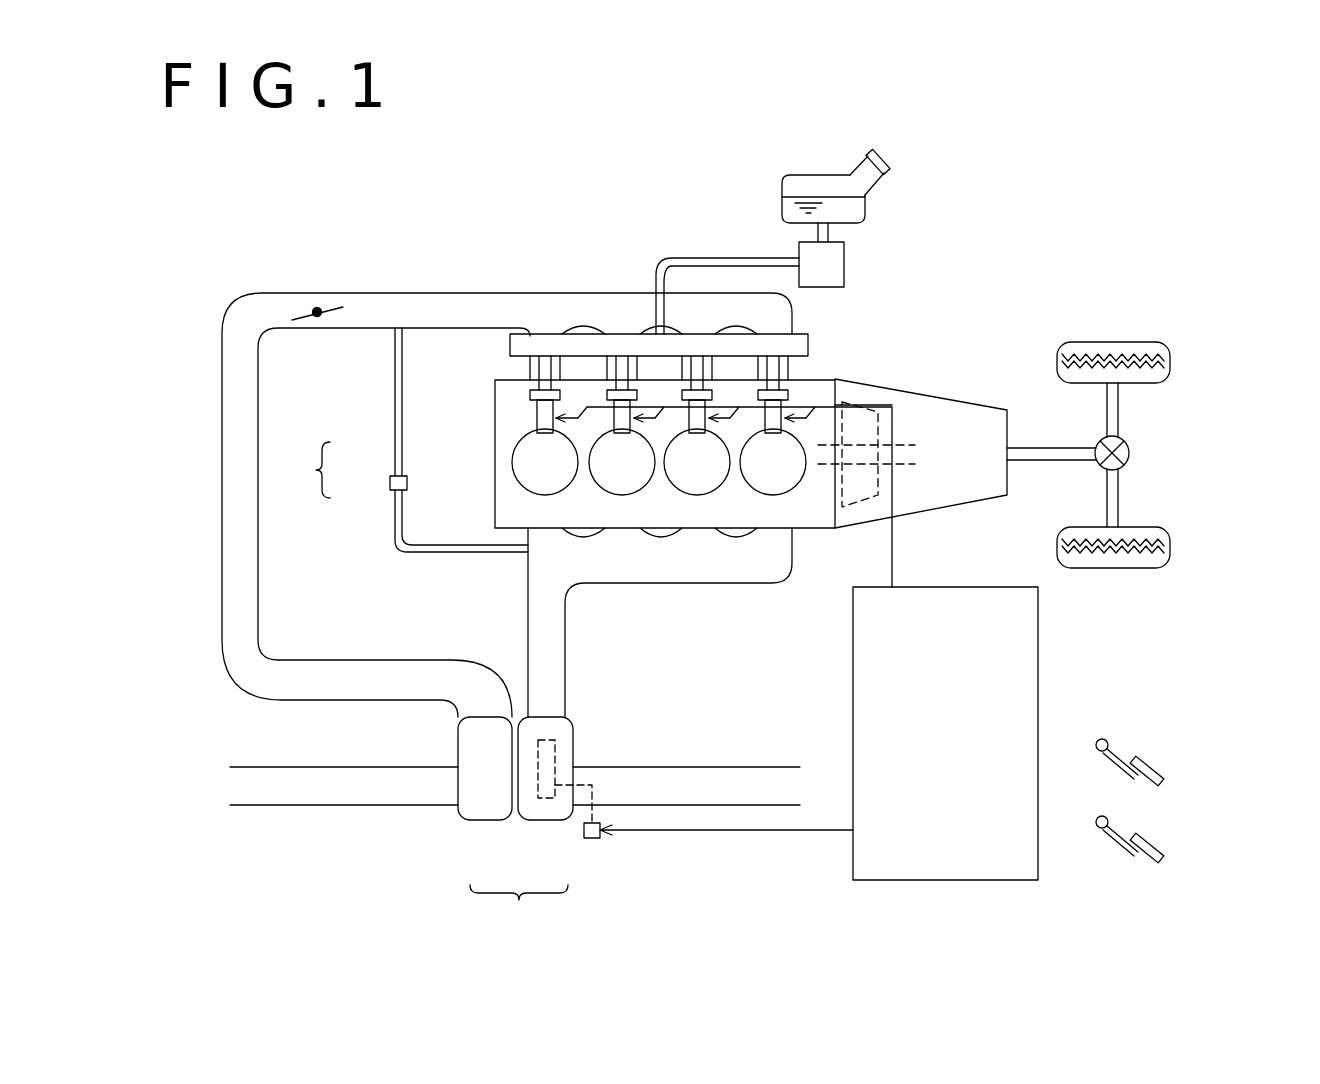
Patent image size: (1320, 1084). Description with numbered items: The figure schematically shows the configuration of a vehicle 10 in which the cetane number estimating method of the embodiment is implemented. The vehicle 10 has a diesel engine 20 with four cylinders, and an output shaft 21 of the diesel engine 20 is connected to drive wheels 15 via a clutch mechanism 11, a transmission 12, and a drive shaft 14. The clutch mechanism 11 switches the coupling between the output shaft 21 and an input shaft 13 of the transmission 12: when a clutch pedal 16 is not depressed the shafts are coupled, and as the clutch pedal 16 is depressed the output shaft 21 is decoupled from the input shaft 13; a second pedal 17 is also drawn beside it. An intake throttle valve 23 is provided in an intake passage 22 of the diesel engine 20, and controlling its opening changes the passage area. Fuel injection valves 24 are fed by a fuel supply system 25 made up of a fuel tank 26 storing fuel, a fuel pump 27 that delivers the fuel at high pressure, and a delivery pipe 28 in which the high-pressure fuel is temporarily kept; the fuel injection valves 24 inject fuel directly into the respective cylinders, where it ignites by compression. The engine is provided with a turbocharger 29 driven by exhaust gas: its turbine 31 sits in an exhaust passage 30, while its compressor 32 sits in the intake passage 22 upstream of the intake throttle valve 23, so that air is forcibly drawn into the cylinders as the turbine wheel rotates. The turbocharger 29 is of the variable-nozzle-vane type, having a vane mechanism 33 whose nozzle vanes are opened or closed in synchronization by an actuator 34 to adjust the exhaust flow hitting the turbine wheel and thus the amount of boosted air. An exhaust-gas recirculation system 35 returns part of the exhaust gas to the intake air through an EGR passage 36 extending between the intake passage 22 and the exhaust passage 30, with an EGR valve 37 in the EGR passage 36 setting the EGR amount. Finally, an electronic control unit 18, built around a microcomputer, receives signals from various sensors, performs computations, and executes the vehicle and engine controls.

The vehicle 10 is at (1090, 232).
The clutch mechanism 11 is at (865, 503).
The transmission 12 is at (922, 396).
The input shaft 13 is at (903, 442).
The drive shaft 14 is at (1047, 463).
The drive wheels 15 is at (1172, 362).
The clutch pedal 16 is at (1120, 765).
The brake pedal 17 is at (1120, 838).
The electronic control unit 18 is at (948, 587).
The diesel engine 20 is at (495, 512).
The output shaft 21 is at (830, 470).
The intake passage 22 is at (433, 293).
The intake throttle valve 23 is at (310, 324).
The fuel injection valve 24 is at (530, 394).
The fuel supply system 25 is at (734, 174).
The fuel tank 26 is at (782, 208).
The fuel pump 27 is at (844, 252).
The delivery pipe 28 is at (808, 340).
The turbocharger 29 is at (519, 912).
The exhaust passage 30 is at (528, 583).
The turbine 31 is at (550, 822).
The compressor 32 is at (487, 822).
The vane mechanism 33 is at (557, 753).
The actuator 34 is at (597, 840).
The exhaust-gas recirculation system 35 is at (300, 470).
The EGR passage 36 is at (395, 458).
The EGR valve 37 is at (390, 483).